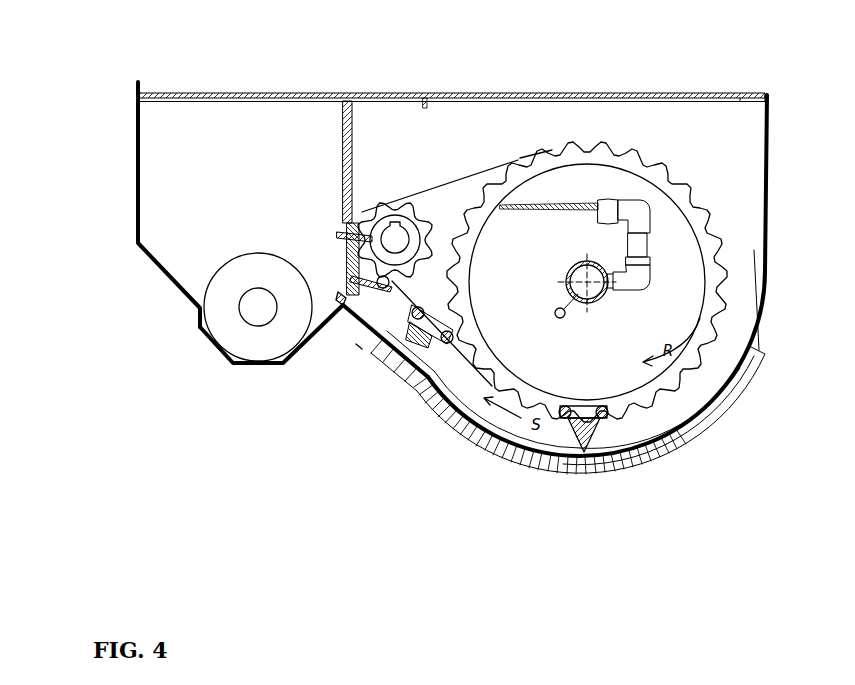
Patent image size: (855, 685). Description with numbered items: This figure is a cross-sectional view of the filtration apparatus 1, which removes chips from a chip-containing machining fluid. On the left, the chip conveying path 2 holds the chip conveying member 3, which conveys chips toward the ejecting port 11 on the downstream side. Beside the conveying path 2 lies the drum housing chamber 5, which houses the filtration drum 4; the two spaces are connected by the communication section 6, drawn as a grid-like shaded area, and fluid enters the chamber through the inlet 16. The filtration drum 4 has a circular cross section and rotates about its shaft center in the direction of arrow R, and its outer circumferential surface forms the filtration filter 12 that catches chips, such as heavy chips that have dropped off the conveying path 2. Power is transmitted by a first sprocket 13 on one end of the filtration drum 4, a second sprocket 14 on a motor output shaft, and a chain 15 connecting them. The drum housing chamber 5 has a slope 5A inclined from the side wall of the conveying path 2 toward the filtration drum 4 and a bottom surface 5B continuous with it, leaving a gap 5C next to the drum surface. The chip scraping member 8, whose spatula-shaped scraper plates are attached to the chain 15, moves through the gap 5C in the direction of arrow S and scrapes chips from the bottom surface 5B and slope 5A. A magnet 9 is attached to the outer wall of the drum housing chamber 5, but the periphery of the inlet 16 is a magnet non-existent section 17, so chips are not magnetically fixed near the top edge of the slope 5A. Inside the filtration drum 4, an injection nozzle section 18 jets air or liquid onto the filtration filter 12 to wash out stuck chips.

The filtration apparatus 1 is at (705, 71).
The chip conveying path 2 is at (226, 353).
The chip conveying member 3 is at (257, 254).
The filtration drum 4 is at (587, 186).
The drum housing chamber 5 is at (760, 277).
The slope 5A is at (443, 381).
The bottom surface 5B is at (656, 448).
The gap 5C is at (493, 437).
The communication section 6 is at (334, 153).
The chip scraping member 8 is at (338, 236).
The magnet 9 is at (431, 395).
The ejecting port 11 is at (408, 320).
The filtration filter 12 is at (681, 197).
The first sprocket 13 is at (517, 176).
The second sprocket 14 is at (407, 212).
The chain 15 is at (473, 178).
The inlet 16 is at (339, 283).
The magnet non-existent section 17 is at (359, 356).
The injection nozzle section 18 is at (600, 216).